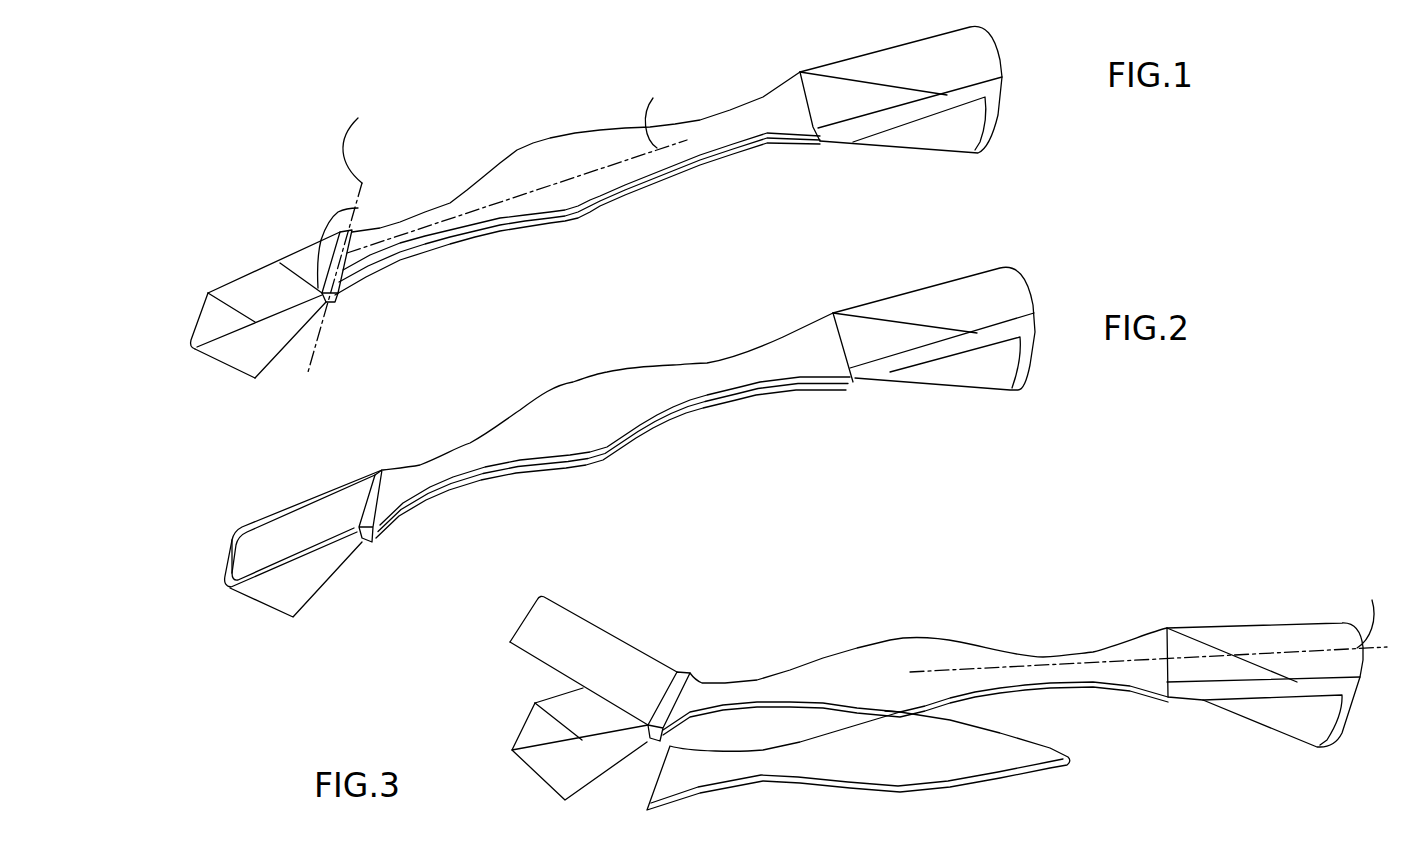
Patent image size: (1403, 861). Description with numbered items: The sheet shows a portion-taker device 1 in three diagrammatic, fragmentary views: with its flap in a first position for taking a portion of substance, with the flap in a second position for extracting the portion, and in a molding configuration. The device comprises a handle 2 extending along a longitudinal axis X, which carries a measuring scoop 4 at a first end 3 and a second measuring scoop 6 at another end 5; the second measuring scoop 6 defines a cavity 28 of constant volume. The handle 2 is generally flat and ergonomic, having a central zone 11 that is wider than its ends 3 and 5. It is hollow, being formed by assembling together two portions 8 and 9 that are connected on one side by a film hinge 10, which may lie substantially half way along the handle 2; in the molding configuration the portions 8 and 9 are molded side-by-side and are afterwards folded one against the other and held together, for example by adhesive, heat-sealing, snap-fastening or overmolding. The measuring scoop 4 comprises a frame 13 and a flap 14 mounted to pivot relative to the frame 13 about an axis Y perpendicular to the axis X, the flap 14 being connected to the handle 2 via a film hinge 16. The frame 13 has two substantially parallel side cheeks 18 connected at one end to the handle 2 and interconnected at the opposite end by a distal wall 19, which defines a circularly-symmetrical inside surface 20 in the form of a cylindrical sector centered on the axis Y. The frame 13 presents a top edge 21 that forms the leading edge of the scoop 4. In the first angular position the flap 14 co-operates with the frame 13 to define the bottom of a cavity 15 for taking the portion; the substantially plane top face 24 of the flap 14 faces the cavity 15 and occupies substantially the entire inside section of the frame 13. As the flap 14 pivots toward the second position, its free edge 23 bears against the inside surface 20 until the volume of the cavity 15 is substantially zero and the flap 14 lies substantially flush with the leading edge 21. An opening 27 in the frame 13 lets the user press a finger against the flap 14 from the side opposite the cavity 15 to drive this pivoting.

In FIG. 1, the portion-taker device 1 is at (1012, 112).
In FIG. 2, the portion-taker device 1 is at (890, 283).
In FIG. 3, the portion-taker device 1 is at (1247, 602).
In FIG. 3, the handle 2 is at (1040, 643).
In FIG. 3, the first end 3 is at (702, 683).
In FIG. 1, the measuring scoop 4 is at (283, 225).
In FIG. 2, the measuring scoop 4 is at (247, 512).
In FIG. 3, the measuring scoop 4 is at (653, 633).
In FIG. 3, the other end 5 is at (1160, 643).
In FIG. 1, the second measuring scoop 6 is at (918, 153).
In FIG. 2, the second measuring scoop 6 is at (917, 390).
In FIG. 3, the second measuring scoop 6 is at (1265, 674).
In FIG. 3, the portion 8 is at (923, 648).
In FIG. 3, the portion 9 is at (918, 767).
In FIG. 3, the film hinge 10 is at (897, 710).
In FIG. 1, the central zone 11 is at (552, 163).
In FIG. 3, the central zone 11 is at (958, 655).
In FIG. 1, the frame 13 is at (262, 342).
In FIG. 2, the frame 13 is at (313, 573).
In FIG. 3, the frame 13 is at (567, 775).
In FIG. 1, the flap 14 is at (308, 287).
In FIG. 2, the flap 14 is at (320, 522).
In FIG. 3, the flap 14 is at (520, 653).
In FIG. 1, the cavity 15 is at (238, 292).
In FIG. 1, the film hinge 16 is at (358, 208).
In FIG. 1, the side cheeks 18 is at (262, 277).
In FIG. 1, the distal wall 19 is at (202, 317).
In FIG. 1, the inside surface 20 is at (210, 322).
In FIG. 1, the top edge 21 is at (190, 326).
In FIG. 2, the top edge 21 is at (268, 515).
In FIG. 3, the free edge 23 is at (533, 665).
In FIG. 2, the top face 24 is at (288, 523).
In FIG. 3, the top face 24 is at (583, 633).
In FIG. 3, the opening 27 is at (615, 730).
In FIG. 3, the cavity 28 is at (1308, 638).